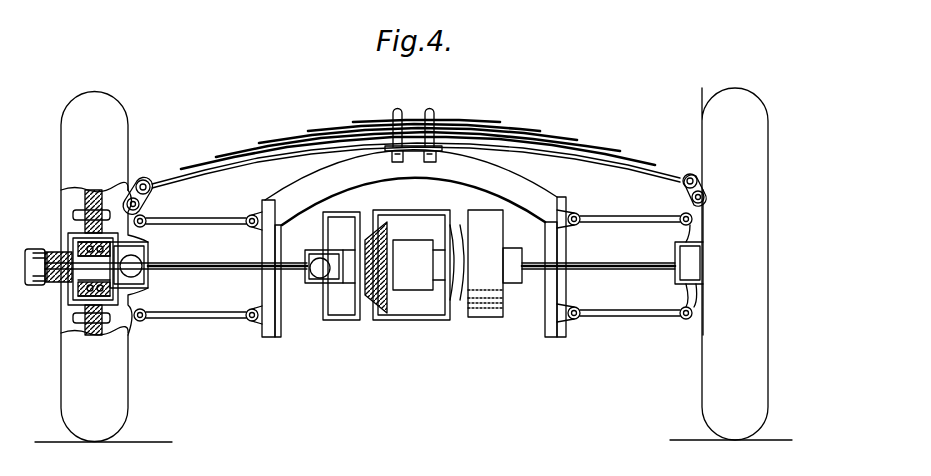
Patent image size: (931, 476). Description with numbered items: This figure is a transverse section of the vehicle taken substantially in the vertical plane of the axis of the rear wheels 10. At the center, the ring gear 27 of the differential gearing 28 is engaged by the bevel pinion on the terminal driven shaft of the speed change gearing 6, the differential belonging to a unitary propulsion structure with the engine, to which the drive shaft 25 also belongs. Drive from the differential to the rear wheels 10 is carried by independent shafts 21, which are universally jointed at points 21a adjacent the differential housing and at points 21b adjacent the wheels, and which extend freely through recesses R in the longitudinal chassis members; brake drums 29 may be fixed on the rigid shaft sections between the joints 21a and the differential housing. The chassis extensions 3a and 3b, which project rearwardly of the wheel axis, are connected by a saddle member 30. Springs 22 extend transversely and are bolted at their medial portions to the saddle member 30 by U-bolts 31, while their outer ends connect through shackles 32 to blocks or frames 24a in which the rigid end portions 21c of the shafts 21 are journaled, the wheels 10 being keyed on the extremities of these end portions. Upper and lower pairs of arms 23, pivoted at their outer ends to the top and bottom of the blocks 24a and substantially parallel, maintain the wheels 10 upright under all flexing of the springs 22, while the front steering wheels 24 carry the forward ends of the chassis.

The rear wheels 10 is at (108, 399).
The springs 22 is at (480, 124).
The shackles 32 is at (140, 180).
The front steering wheels 24 is at (680, 220).
The blocks or frames 24a is at (141, 214).
The U-bolts 31 is at (430, 112).
The saddle member 30 is at (505, 182).
The drive shaft 25 is at (412, 199).
The extension 3a is at (275, 200).
The extension 3b is at (562, 197).
The recesses R is at (280, 250).
The arms 23 is at (210, 218).
The independent shafts 21 is at (242, 272).
The universal joint 21a is at (318, 276).
The universal joint 21b is at (140, 266).
The rigid end portions 21c is at (75, 288).
The brake drums 29 is at (345, 322).
The ring gear 27 is at (380, 318).
The differential gearing 28 is at (415, 285).
The speed change gearing 6 is at (412, 322).